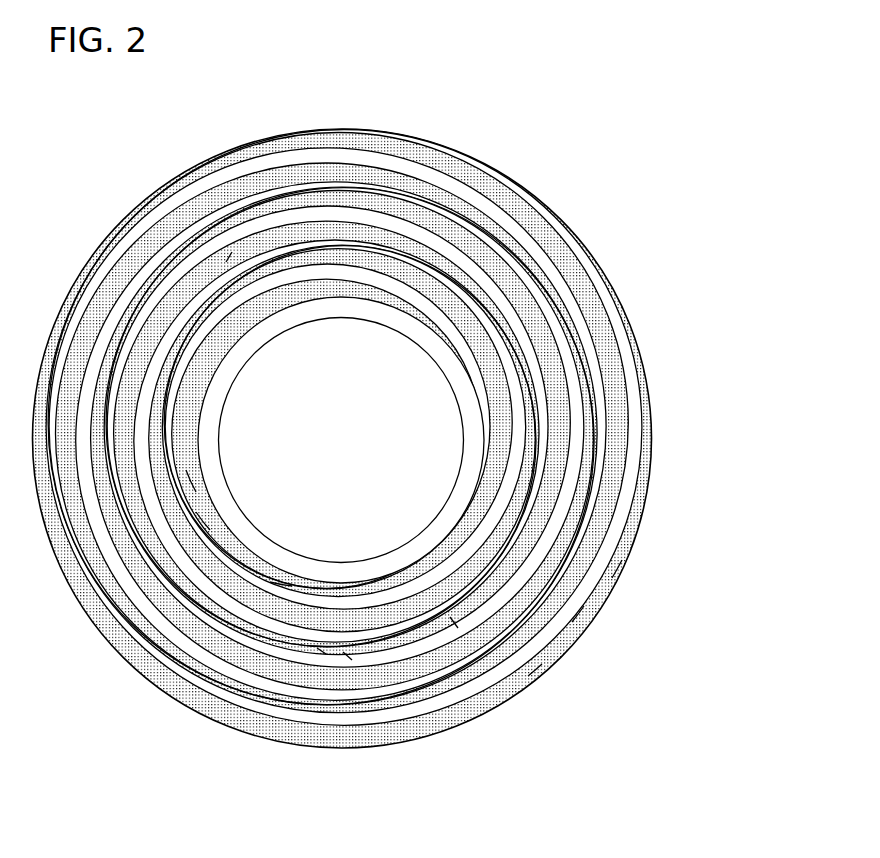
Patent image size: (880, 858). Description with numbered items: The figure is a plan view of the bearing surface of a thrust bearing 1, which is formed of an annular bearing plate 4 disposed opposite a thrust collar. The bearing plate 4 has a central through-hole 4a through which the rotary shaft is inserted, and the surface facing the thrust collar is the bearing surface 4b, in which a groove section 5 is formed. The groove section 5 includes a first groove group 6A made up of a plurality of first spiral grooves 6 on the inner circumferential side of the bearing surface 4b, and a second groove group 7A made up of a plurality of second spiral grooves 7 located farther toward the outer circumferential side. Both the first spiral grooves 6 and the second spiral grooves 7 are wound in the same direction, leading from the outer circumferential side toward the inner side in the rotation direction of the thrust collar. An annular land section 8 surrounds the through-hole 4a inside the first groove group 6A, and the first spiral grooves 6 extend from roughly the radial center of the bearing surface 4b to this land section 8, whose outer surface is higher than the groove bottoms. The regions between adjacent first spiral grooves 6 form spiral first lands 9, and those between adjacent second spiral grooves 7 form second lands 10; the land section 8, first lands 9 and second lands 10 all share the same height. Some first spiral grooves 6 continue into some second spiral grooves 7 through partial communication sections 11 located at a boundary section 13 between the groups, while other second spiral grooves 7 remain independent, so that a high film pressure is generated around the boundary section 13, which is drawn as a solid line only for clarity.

The thrust bearing 1 is at (409, 455).
The bearing plate 4 is at (409, 457).
The through-hole 4a is at (462, 437).
The bearing surface 4b is at (590, 268).
The groove section 5 is at (415, 428).
The first spiral groove 6 is at (405, 428).
The first groove group 6A is at (428, 428).
The second spiral groove 7 is at (622, 432).
The second groove group 7A is at (399, 428).
The land section 8 is at (212, 412).
The first land 9 is at (190, 480).
The second land 10 is at (620, 563).
The partial communication section 11 is at (232, 252).
The boundary section 13 is at (317, 648).